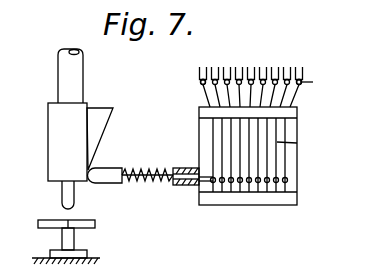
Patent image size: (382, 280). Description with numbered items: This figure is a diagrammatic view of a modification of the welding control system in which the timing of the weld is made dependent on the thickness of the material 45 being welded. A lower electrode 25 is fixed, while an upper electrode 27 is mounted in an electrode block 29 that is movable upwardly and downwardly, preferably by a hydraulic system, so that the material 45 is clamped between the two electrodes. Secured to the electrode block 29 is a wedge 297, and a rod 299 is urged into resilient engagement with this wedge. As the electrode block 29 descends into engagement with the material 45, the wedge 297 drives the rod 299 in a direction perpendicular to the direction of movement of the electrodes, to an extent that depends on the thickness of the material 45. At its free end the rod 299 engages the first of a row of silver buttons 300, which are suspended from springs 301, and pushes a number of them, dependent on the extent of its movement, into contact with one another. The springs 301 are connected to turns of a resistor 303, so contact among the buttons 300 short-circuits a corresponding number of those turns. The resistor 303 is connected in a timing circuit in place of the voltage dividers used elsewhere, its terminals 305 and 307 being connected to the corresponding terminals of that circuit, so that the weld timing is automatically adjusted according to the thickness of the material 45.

The lower electrode 25 is at (62, 243).
The upper electrode 27 is at (62, 196).
The electrode block 29 is at (53, 140).
The material 45 is at (96, 224).
The wedge 297 is at (113, 108).
The rod 299 is at (118, 167).
The silver buttons 300 is at (251, 188).
The springs 301 is at (299, 145).
The resistor 303 is at (240, 79).
The terminal 305 is at (200, 80).
The terminal 307 is at (301, 81).